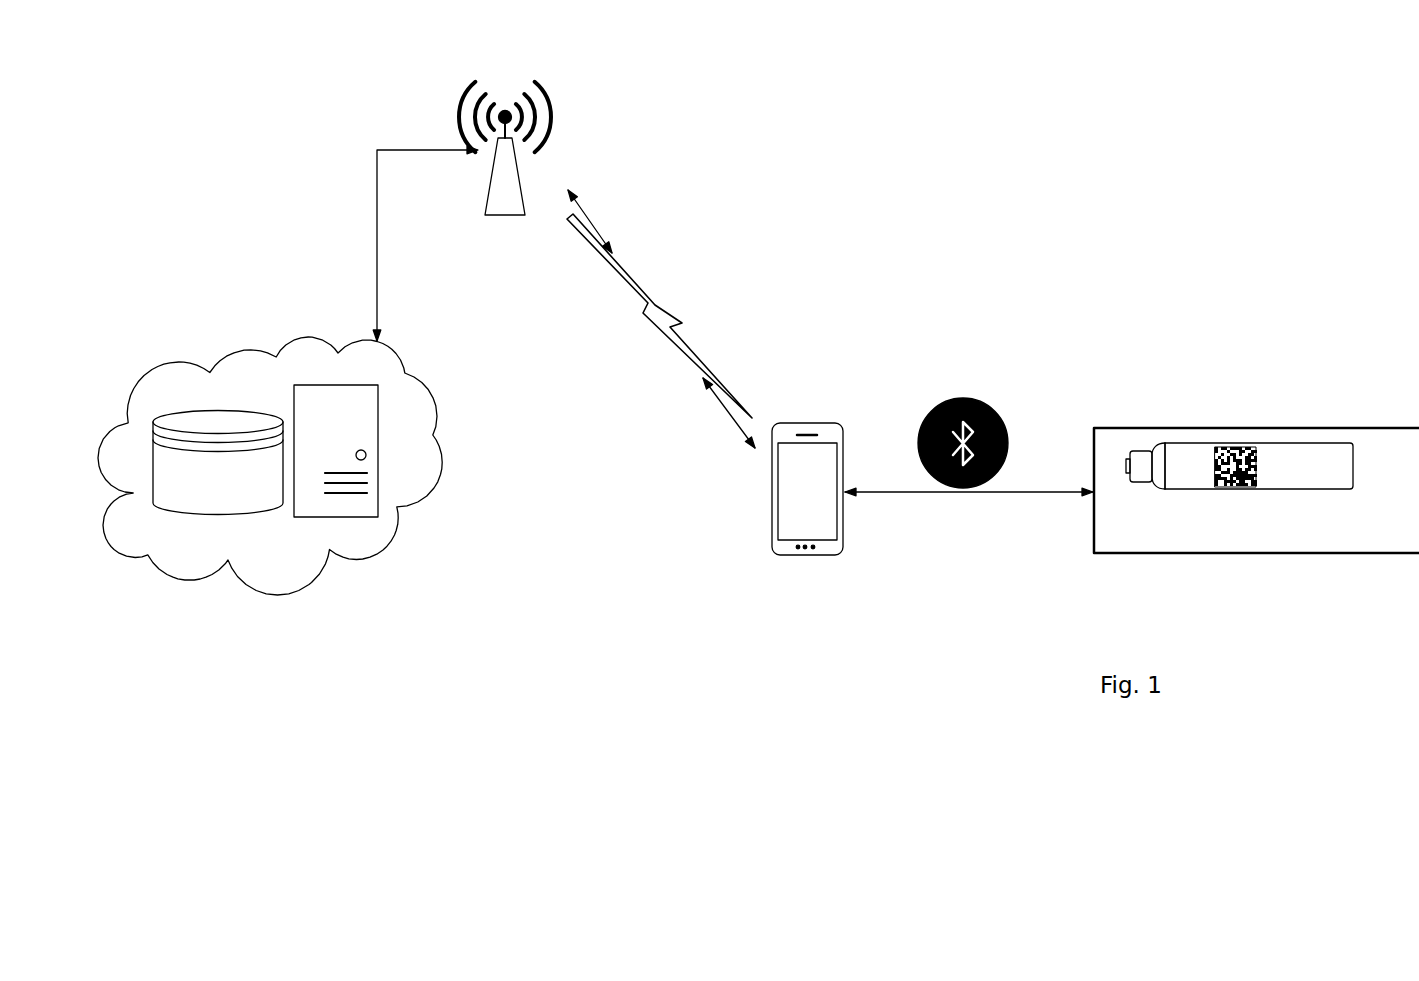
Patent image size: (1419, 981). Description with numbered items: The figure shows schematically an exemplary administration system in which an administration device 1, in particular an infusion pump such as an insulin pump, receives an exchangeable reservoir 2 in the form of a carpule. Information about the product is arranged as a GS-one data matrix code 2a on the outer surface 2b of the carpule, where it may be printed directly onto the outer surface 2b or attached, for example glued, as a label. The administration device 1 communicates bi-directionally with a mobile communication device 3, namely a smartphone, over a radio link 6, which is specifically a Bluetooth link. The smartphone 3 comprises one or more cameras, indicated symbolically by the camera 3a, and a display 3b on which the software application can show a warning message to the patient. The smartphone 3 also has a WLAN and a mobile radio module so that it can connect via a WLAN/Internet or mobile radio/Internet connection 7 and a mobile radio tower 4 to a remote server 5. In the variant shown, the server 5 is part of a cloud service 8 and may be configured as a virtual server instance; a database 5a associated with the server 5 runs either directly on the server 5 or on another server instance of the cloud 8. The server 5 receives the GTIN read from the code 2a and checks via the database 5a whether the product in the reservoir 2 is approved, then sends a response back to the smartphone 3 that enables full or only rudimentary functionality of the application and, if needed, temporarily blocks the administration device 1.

The administration device 1 is at (1283, 555).
The reservoir 2 is at (1312, 460).
The data matrix code 2a is at (1235, 448).
The outer surface 2b is at (1188, 455).
The mobile communication device 3 is at (807, 506).
The camera 3a is at (823, 435).
The display 3b is at (792, 486).
The mobile radio tower 4 is at (552, 95).
The server 5 is at (352, 522).
The database 5a is at (216, 522).
The radio link 6 is at (967, 508).
The WLAN/Internet or mobile radio/Internet connection 7 is at (660, 253).
The cloud service 8 is at (420, 490).